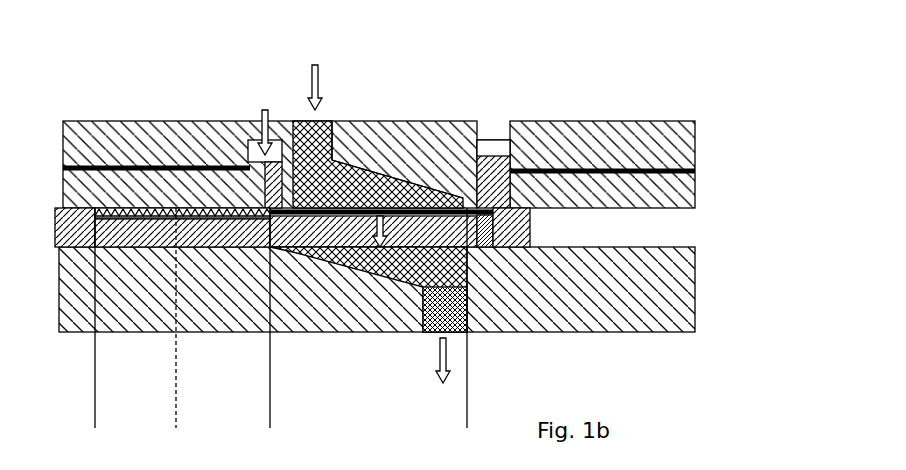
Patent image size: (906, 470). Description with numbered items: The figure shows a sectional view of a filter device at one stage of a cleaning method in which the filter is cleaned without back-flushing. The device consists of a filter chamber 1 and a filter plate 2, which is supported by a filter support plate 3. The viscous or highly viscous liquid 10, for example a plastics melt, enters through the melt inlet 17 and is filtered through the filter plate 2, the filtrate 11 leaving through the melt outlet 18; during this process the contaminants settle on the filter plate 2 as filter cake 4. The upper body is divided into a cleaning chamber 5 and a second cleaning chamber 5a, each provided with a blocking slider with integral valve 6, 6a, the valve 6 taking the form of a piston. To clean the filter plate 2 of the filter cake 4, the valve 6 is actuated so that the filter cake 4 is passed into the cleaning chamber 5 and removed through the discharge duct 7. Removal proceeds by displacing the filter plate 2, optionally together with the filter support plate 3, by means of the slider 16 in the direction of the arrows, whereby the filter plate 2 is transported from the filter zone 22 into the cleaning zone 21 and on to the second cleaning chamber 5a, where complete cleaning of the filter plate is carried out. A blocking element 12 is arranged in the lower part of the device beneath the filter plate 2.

The filter chamber 1 is at (137, 293).
The filter plate 2 is at (180, 247).
The filter support plate 3 is at (236, 247).
The contaminants (filter cake) 4 is at (362, 173).
The cleaning chamber 5 is at (200, 125).
The second cleaning chamber 5a is at (557, 140).
The blocking slider with integral valve 6 is at (253, 123).
The second blocking slider with integral valve 6a is at (495, 140).
The discharge duct in the cleaning chamber 7 is at (98, 166).
The viscous or highly viscous liquid to be filtered 10 is at (397, 187).
The filtrate of the viscous or highly viscous liquid 11 is at (470, 290).
The blocking element 12 is at (293, 253).
The slider for moving the filter or the filter support plate 16 is at (535, 227).
The melt inlet 17 is at (317, 71).
The melt outlet 18 is at (443, 376).
The cleaning zone 21 is at (270, 424).
The filter zone 22 is at (467, 424).